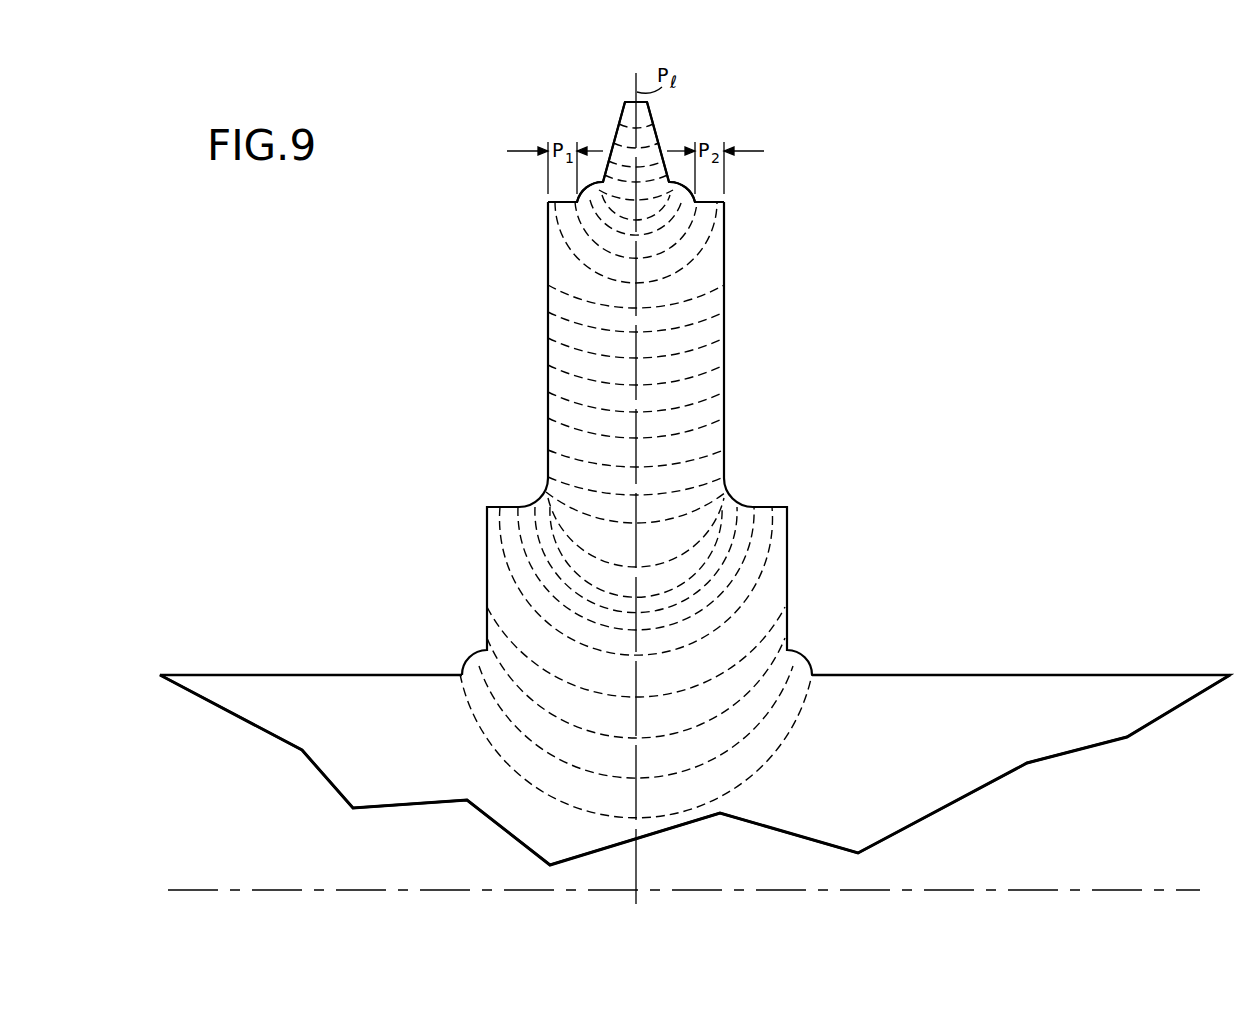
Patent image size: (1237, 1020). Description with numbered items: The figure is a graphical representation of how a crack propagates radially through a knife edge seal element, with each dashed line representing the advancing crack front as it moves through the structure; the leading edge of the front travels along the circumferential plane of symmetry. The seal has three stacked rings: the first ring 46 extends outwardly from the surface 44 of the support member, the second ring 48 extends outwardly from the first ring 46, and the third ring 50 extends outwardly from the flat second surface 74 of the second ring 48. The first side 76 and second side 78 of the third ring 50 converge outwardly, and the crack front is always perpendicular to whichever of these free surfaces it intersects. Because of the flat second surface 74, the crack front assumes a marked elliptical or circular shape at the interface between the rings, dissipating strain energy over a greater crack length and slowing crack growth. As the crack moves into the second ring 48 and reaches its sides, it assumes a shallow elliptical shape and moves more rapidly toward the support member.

The surface of the support member 44 is at (367, 673).
The first ring 46 is at (770, 590).
The second ring 48 is at (703, 382).
The third ring 50 is at (650, 150).
The second surface 74 is at (560, 197).
The first side 76 is at (610, 131).
The second side 78 is at (652, 130).